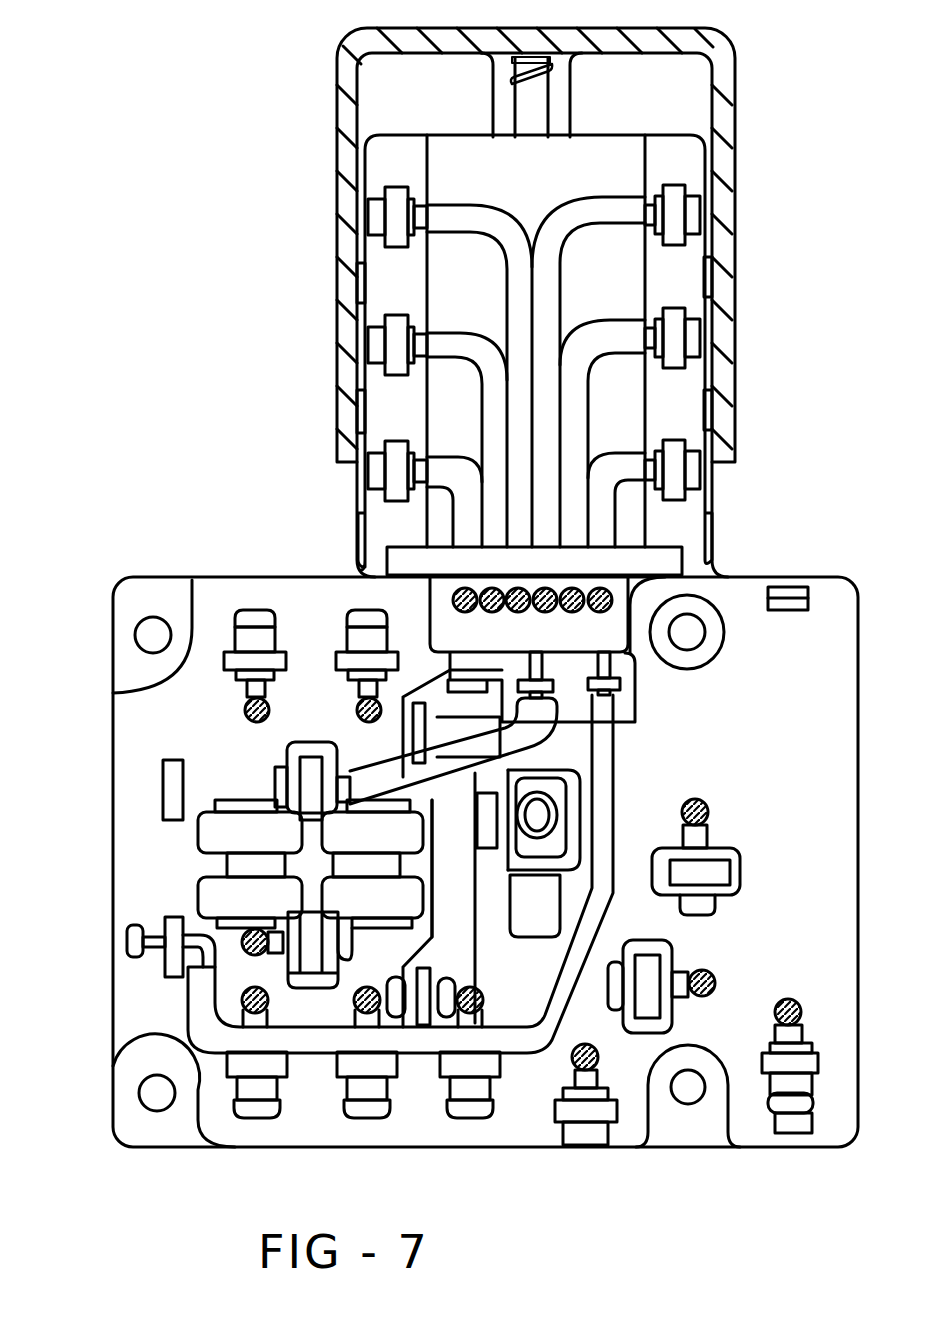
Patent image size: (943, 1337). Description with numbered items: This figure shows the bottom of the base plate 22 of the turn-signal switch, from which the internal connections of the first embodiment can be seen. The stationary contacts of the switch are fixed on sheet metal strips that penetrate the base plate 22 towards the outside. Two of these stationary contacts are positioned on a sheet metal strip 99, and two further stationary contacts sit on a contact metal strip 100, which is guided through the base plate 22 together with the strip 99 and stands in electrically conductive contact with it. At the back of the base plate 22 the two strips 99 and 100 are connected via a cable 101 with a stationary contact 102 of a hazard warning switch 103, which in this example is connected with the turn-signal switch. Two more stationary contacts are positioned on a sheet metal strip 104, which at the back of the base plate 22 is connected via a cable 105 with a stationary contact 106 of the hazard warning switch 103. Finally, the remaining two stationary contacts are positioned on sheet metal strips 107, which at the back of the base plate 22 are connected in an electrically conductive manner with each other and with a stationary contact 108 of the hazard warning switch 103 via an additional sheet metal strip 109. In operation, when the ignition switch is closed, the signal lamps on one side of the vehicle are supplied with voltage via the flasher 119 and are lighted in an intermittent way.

The base plate 22 is at (157, 1037).
The sheet metal strip 99 is at (300, 777).
The contact metal strip 100 is at (310, 760).
The cable 101 is at (513, 747).
The stationary contact 102 is at (545, 686).
The hazard warning switch 103 is at (312, 303).
The sheet metal strip 104 is at (172, 918).
The cable 105 is at (597, 922).
The stationary contact 106 is at (625, 683).
The sheet metal strips 107 is at (417, 743).
The stationary contact 108 is at (460, 683).
The additional sheet metal strip 109 is at (460, 937).
The flasher 119 is at (250, 953).